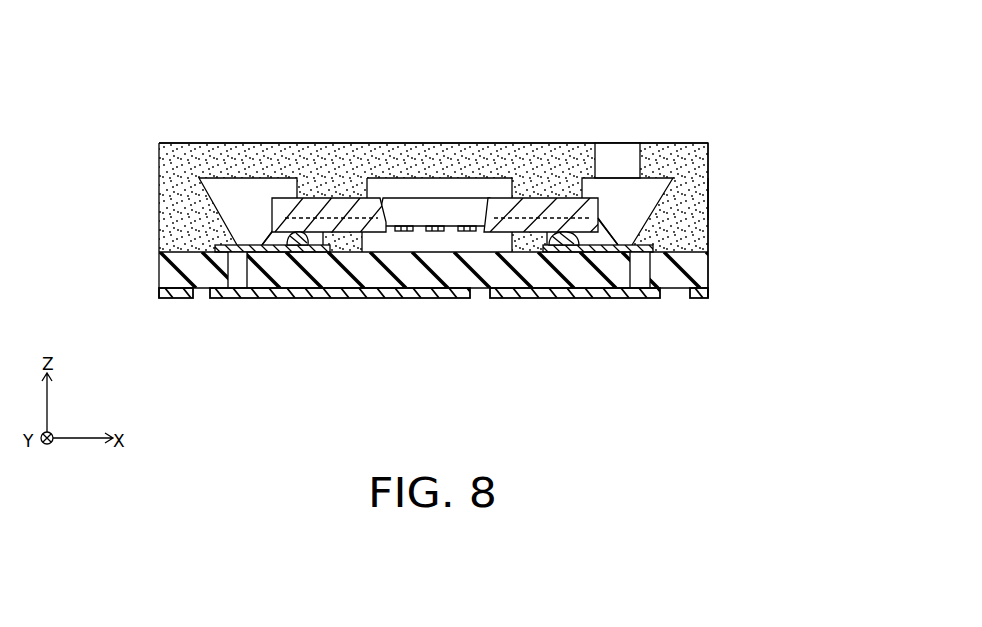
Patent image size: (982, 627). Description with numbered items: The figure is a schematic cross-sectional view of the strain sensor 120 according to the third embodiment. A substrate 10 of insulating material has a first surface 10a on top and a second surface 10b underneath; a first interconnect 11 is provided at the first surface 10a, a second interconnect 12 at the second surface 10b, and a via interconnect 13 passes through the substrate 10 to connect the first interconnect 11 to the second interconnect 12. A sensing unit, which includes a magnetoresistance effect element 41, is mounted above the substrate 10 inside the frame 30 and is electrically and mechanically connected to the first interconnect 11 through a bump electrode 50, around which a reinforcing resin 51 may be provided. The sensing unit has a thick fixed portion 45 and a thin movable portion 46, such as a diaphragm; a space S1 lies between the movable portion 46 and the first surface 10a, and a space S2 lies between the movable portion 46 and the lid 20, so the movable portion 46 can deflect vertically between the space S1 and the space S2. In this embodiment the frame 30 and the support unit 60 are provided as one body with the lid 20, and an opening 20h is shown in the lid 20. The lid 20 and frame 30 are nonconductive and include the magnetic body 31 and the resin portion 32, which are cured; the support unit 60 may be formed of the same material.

The strain sensor 120 is at (669, 59).
The substrate 10 is at (698, 272).
The first surface 10a is at (686, 250).
The second surface 10b is at (665, 298).
The first interconnect 11 is at (272, 246).
The second interconnect 12 is at (291, 294).
The via interconnect 13 is at (235, 265).
The lid 20 is at (676, 157).
The through hole of cover 20h is at (618, 150).
The frame 30 is at (178, 220).
The magnetic body 31 is at (697, 181).
The resin portion 32 is at (693, 205).
The magnetoresistance effect element 41 is at (403, 226).
The fixed portion 45 is at (310, 198).
The movable portion 46 is at (420, 228).
The bump electrode 50 is at (306, 246).
The resin 51 is at (260, 237).
The support unit 60 is at (345, 190).
The space S1 is at (442, 243).
The space S2 is at (473, 190).